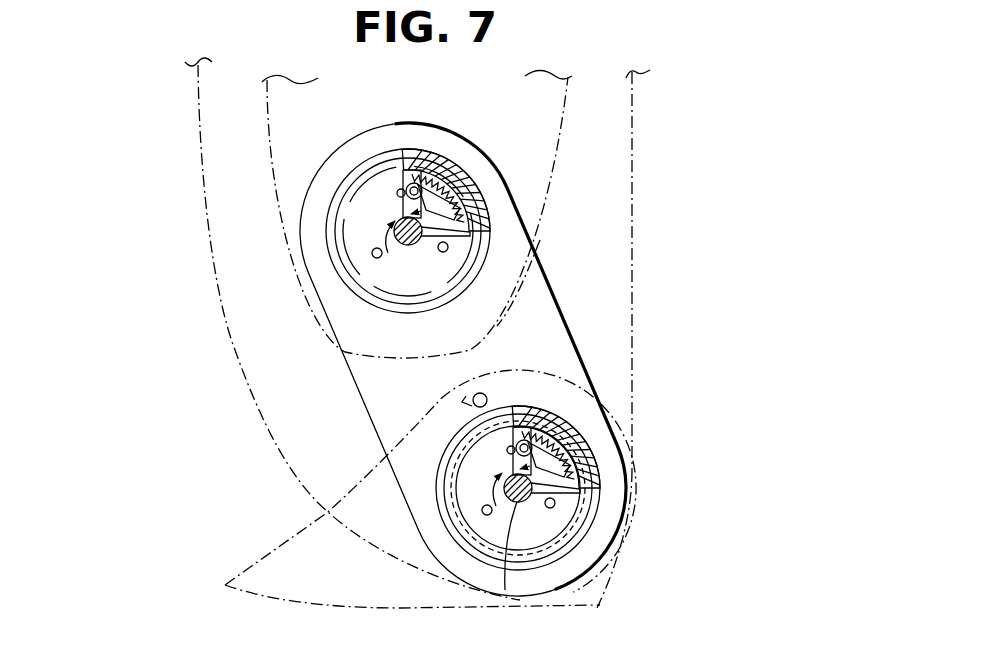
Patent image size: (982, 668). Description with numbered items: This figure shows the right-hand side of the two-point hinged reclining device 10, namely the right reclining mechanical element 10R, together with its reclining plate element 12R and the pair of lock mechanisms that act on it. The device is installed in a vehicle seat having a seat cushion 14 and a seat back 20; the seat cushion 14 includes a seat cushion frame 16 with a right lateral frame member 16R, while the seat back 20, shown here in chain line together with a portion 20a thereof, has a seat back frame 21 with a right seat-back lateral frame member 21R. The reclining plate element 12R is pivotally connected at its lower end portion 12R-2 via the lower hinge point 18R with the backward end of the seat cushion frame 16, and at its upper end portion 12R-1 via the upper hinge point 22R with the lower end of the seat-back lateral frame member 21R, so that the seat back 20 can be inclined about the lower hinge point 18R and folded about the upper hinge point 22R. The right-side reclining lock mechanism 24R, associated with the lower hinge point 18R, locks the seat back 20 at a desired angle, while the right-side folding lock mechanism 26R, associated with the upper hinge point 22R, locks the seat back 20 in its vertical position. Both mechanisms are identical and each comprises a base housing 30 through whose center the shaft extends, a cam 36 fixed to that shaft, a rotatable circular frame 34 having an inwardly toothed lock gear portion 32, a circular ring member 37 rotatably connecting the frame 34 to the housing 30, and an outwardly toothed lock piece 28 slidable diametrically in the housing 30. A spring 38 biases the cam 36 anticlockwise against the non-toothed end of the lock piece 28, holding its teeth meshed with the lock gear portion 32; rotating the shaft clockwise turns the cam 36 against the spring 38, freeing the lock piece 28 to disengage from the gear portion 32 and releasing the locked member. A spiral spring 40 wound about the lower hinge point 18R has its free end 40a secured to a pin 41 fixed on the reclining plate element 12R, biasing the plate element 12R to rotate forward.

The reclining device 10 is at (132, 124).
The right reclining mechanical element 10R is at (722, 121).
The reclining plate element 12R is at (570, 323).
The upper belt section 12R-1 is at (513, 200).
The lower end portion of reclining plate element 12R-2 is at (622, 450).
The seat cushion 14 is at (609, 611).
The seat cushion frame 16 is at (292, 522).
The right lateral frame member 16R is at (632, 552).
The lower hinge point 18R is at (505, 590).
The seat back 20 is at (637, 266).
The handle edge 20a is at (634, 293).
The seat back frame 21 is at (590, 127).
The right seat-back lateral frame member 21R is at (549, 215).
The upper hinge point 22R is at (382, 258).
The right-side reclining lock mechanism 24R is at (431, 466).
The right-side folding lock mechanism 26R is at (323, 214).
The outwardly toothed lock piece 28 is at (437, 200).
The base housing 30 is at (408, 284).
The inwardly toothed lock gear portion 32 is at (445, 214).
The rotatable circular frame 34 is at (430, 168).
The cam 36 is at (425, 233).
The circular ring member 37 is at (446, 199).
The spring 38 is at (410, 150).
The spiral spring 40 is at (452, 497).
The free end 40a is at (465, 394).
The pin 41 is at (486, 395).